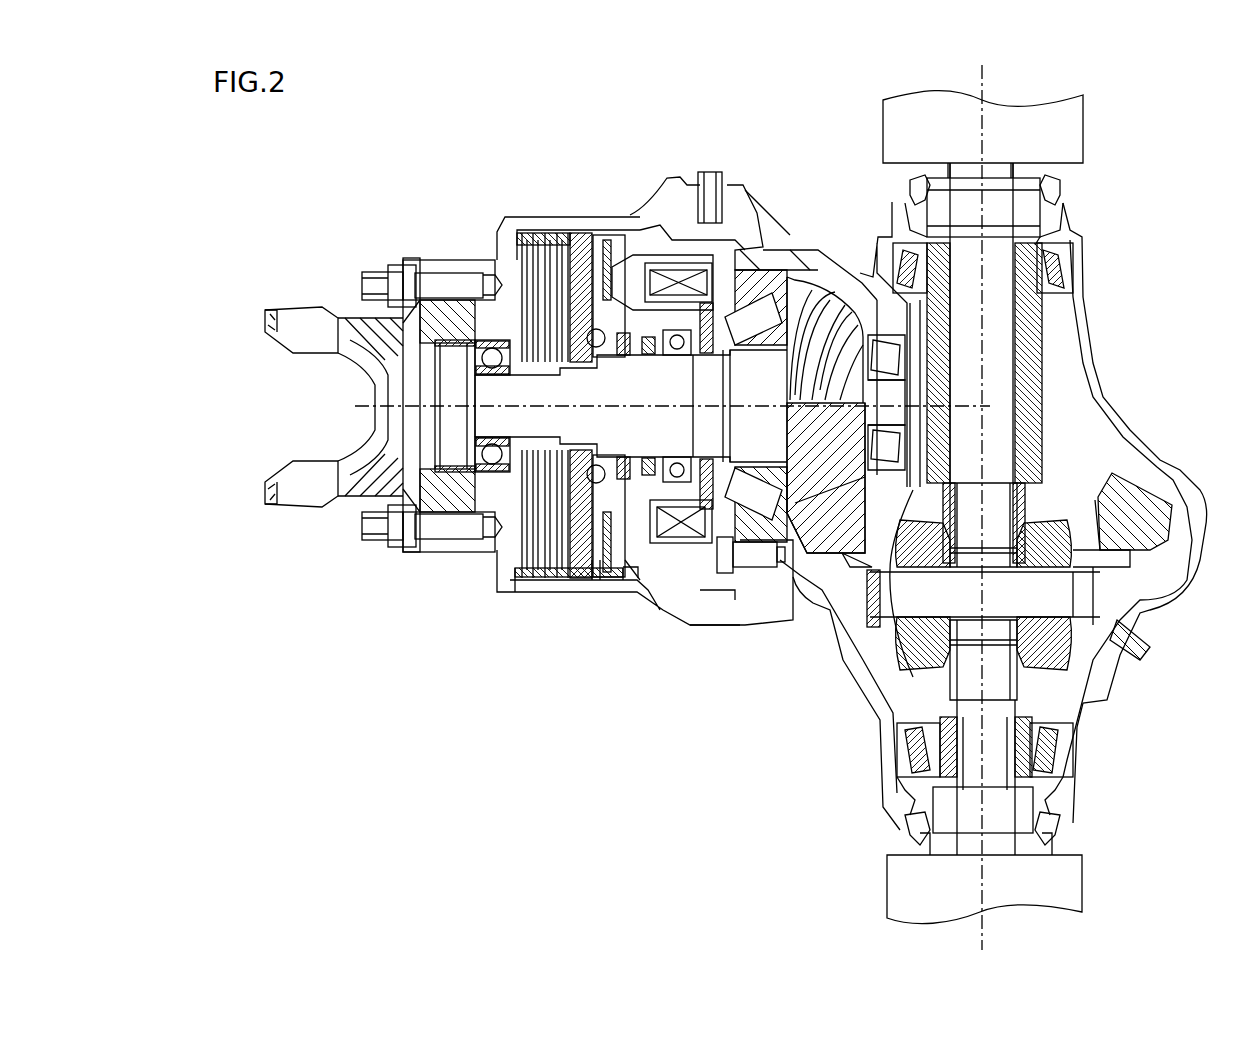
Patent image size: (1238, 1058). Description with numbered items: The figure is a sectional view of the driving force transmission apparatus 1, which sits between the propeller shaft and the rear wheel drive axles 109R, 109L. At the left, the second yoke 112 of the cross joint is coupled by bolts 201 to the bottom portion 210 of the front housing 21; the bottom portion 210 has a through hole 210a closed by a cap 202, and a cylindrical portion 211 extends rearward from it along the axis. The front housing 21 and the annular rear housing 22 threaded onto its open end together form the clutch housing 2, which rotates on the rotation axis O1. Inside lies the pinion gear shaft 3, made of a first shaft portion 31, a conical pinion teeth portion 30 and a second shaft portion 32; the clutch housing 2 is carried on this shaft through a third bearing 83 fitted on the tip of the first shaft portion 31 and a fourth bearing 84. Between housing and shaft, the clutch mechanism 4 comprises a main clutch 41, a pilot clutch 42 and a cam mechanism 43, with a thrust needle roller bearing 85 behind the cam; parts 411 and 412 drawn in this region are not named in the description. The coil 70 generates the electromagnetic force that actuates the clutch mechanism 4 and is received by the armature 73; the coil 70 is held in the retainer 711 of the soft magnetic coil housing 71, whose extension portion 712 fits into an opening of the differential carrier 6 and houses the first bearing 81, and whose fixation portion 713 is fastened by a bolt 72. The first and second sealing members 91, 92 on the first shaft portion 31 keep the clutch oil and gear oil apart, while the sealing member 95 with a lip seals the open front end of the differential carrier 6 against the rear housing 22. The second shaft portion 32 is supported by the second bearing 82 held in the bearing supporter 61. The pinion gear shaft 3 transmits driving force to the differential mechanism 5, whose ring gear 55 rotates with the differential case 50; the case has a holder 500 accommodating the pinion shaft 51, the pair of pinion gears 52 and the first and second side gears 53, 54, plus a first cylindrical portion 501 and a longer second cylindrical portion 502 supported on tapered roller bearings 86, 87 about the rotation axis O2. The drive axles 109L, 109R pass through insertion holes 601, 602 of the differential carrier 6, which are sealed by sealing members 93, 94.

The driving force transmission apparatus 1 is at (468, 166).
The clutch housing 2 is at (658, 648).
The front housing 21 is at (612, 597).
The rear housing 22 is at (643, 583).
The cylindrical portion 211 is at (567, 585).
The pinion gear shaft 3 is at (829, 388).
The pinion teeth portion 30 is at (838, 440).
The first shaft portion 31 is at (660, 441).
The second shaft portion 32 is at (895, 412).
The clutch mechanism 4 is at (605, 168).
The main clutch 41 is at (545, 235).
The pilot clutch 42 is at (604, 245).
The cam mechanism 43 is at (575, 240).
The clutch outer housing 411 is at (500, 235).
The clutch inner hub 412 is at (490, 250).
The differential mechanism 5 is at (1155, 577).
The differential case 50 is at (1080, 630).
The pinion shaft 51 is at (1060, 600).
The pinion gears 52 is at (1040, 650).
The first side gear 53 is at (1017, 617).
The second side gear 54 is at (1027, 497).
The ring gear 55 is at (1172, 540).
The holder 500 is at (880, 640).
The first cylindrical portion 501 is at (1040, 790).
The second cylindrical portion 502 is at (1030, 345).
The differential carrier 6 is at (1085, 293).
The bearing supporter 61 is at (923, 475).
The insertion hole 601 is at (905, 790).
The insertion hole 602 is at (1060, 237).
The coil 70 is at (660, 262).
The coil housing 71 is at (750, 205).
The retainer 711 is at (745, 252).
The extension portion 712 is at (765, 262).
The fixation portion 713 is at (735, 605).
The bolt 72 is at (770, 572).
The armature 73 is at (590, 587).
The first bearing 81 is at (752, 345).
The second bearing 82 is at (897, 463).
The third bearing 83 is at (495, 360).
The fourth bearing 84 is at (677, 360).
The thrust needle roller bearing 85 is at (622, 360).
The tapered roller bearing 86 is at (1050, 752).
The tapered roller bearing 87 is at (1065, 262).
The first sealing member 91 is at (708, 355).
The second sealing member 92 is at (648, 360).
The sealing member 93 is at (905, 828).
The sealing member 94 is at (1050, 196).
The sealing member 95 is at (712, 200).
The rear wheel drive axle 109R is at (1083, 140).
The rear wheel drive axle 109L is at (1083, 888).
The second yoke 112 is at (312, 310).
The bolts 201 is at (440, 283).
The cap 202 is at (407, 378).
The bottom portion 210 is at (462, 548).
The through hole 210a is at (407, 462).
The rotation axis O1 is at (370, 406).
The rotation axis O2 is at (985, 928).